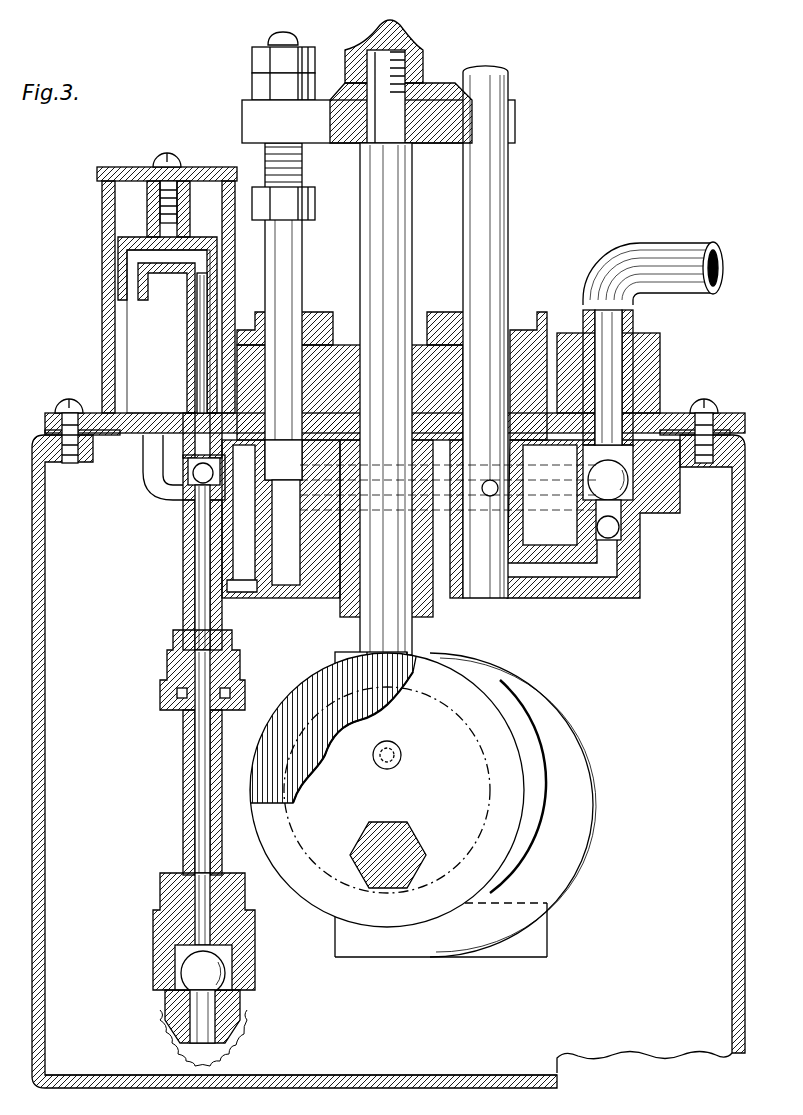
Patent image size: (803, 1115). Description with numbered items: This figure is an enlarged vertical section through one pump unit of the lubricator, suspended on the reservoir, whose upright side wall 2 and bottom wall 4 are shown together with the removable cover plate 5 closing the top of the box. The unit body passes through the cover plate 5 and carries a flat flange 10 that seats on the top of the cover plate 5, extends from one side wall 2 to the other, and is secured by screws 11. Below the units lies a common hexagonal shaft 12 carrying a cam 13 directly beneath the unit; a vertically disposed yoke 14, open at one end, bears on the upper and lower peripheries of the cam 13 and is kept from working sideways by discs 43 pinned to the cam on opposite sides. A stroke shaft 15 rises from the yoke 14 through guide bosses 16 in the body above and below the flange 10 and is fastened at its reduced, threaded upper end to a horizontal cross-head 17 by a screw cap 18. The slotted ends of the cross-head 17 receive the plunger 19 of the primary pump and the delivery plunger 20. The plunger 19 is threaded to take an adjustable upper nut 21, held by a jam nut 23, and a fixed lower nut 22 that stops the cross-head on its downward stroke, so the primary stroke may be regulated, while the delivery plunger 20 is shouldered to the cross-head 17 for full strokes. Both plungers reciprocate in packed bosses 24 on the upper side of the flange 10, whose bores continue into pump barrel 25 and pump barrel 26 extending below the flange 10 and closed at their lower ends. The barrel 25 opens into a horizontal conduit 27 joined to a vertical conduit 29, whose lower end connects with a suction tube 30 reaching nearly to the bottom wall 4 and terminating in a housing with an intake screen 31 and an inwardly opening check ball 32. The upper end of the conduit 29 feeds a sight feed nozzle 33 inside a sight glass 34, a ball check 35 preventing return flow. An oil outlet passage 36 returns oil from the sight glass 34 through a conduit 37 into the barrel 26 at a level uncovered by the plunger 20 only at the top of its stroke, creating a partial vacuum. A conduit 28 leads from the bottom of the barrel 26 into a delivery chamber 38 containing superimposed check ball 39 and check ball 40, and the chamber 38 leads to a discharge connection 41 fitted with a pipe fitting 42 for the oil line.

The side wall 2 is at (32, 522).
The bottom wall 4 is at (372, 1075).
The cover plate 5 is at (45, 432).
The flange 10 is at (45, 418).
The screws 11 is at (70, 398).
The shaft 12 is at (412, 840).
The cam 13 is at (325, 740).
The yoke 14 is at (585, 762).
The stroke shaft 15 is at (405, 190).
The guide bosses 16 is at (418, 357).
The cross-head 17 is at (428, 95).
The screw cap 18 is at (398, 35).
The plunger 19 is at (262, 42).
The delivery plunger 20 is at (490, 160).
The upper nut 21 is at (252, 88).
The lower nut 22 is at (305, 195).
The jam nut 23 is at (252, 63).
The bosses 24 is at (196, 355).
The pump barrel 25 is at (293, 595).
The pump barrel 26 is at (526, 522).
The conduit 27 is at (248, 592).
The conduit 28 is at (532, 598).
The conduit 29 is at (183, 542).
The suction tube 30 is at (183, 805).
The intake screen 31 is at (170, 1048).
The check ball 32 is at (205, 975).
The sight feed nozzle 33 is at (188, 381).
The sight glass 34 is at (100, 215).
The ball check 35 is at (192, 476).
The oil outlet passage 36 is at (165, 413).
The conduit 37 is at (243, 505).
The delivery chamber 38 is at (656, 507).
The check ball 39 is at (622, 530).
The check ball 40 is at (617, 480).
The discharge connection 41 is at (432, 315).
The pipe fitting 42 is at (683, 262).
The discs 43 is at (270, 808).